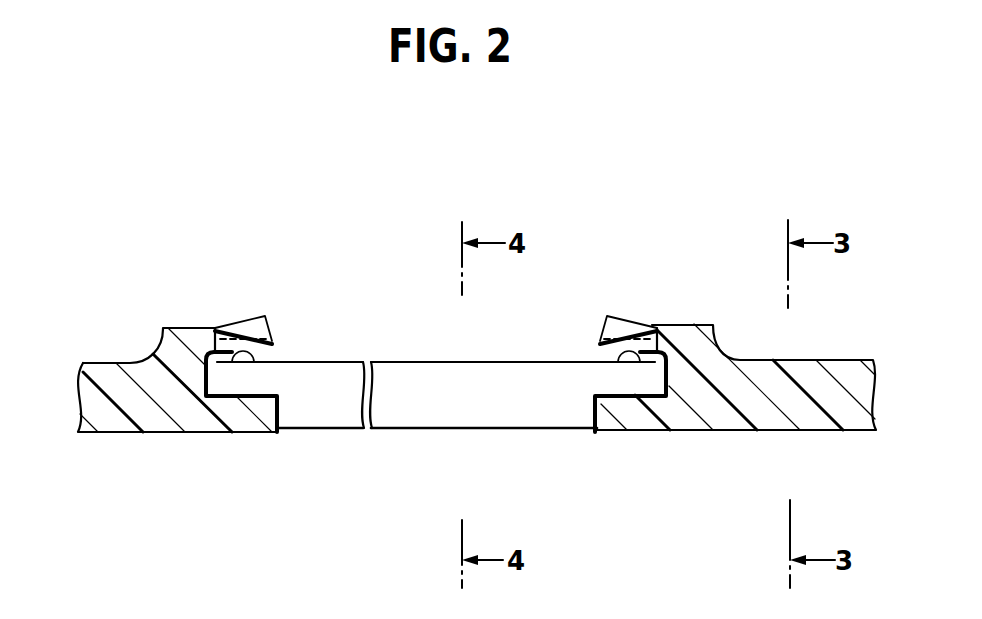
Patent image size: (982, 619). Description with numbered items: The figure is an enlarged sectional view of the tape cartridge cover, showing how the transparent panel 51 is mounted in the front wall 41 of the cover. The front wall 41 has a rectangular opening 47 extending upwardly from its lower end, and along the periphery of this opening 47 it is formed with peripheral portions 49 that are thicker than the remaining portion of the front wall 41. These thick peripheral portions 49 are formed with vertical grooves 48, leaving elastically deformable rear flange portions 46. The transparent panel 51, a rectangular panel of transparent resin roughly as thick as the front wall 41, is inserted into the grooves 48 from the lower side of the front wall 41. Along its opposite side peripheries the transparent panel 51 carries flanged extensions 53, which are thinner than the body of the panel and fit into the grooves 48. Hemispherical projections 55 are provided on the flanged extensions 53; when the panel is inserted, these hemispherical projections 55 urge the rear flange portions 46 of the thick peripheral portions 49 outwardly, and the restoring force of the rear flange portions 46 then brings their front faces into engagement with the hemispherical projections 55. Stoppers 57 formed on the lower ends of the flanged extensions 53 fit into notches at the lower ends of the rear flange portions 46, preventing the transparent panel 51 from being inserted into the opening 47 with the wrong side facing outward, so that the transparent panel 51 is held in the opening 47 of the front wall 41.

The front wall 41 is at (733, 412).
The rear flange portions 46 is at (258, 320).
The opening 47 is at (276, 420).
The grooves 48 is at (213, 403).
The peripheral portions 49 is at (190, 327).
The transparent panel 51 is at (413, 408).
The flanged extensions 53 is at (240, 385).
The hemispherical projections 55 is at (241, 350).
The stoppers 57 is at (280, 345).